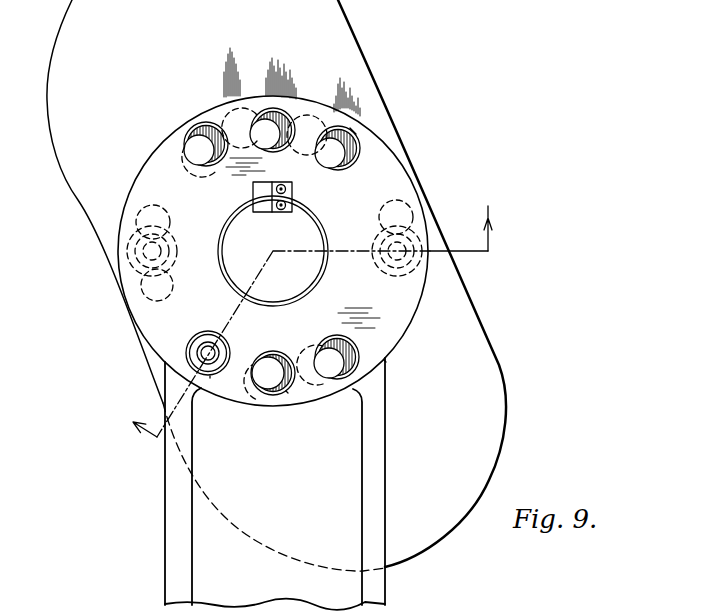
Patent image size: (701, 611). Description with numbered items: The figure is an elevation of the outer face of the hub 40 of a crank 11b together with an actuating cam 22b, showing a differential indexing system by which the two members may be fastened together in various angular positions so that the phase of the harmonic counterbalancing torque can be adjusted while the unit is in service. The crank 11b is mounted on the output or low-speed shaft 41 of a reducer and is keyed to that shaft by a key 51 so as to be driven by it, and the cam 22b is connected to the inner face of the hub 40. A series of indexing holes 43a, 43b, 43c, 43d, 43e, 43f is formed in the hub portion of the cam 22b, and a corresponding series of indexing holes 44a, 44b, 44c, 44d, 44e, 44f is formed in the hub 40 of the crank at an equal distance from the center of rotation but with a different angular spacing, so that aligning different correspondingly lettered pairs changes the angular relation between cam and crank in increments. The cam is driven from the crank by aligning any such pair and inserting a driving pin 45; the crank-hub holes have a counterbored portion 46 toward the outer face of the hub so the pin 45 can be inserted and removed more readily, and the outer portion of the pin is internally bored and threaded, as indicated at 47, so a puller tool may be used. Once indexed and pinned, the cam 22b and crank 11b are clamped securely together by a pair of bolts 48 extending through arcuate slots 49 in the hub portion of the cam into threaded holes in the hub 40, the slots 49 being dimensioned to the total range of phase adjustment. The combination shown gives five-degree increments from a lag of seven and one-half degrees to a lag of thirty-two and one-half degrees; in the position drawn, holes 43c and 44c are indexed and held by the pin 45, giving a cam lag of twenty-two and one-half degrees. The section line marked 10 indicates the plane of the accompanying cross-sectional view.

The section line / viewing direction 10 is at (298, 310).
The crank 11b is at (386, 590).
The cam 22b is at (503, 373).
The hub 40 is at (410, 322).
The output or low-speed shaft 41 is at (222, 276).
The indexing hole 43a is at (320, 387).
The indexing hole 43b is at (255, 400).
The indexing hole 43c is at (210, 378).
The indexing hole 43d is at (190, 172).
The indexing hole 43e is at (244, 108).
The indexing hole 43f is at (310, 115).
The indexing hole 44a is at (333, 335).
The indexing hole 44b is at (272, 351).
The indexing hole 44c is at (210, 326).
The indexing hole 44d is at (191, 130).
The indexing hole 44e is at (286, 148).
The indexing hole 44f is at (360, 146).
The driving pin 45 is at (197, 358).
The counterbored portion 46 is at (350, 128).
The internally bored and threaded portion 47 is at (230, 323).
The bolts 48 is at (127, 259).
The arcuate slots 49 is at (137, 292).
The key 51 is at (253, 188).